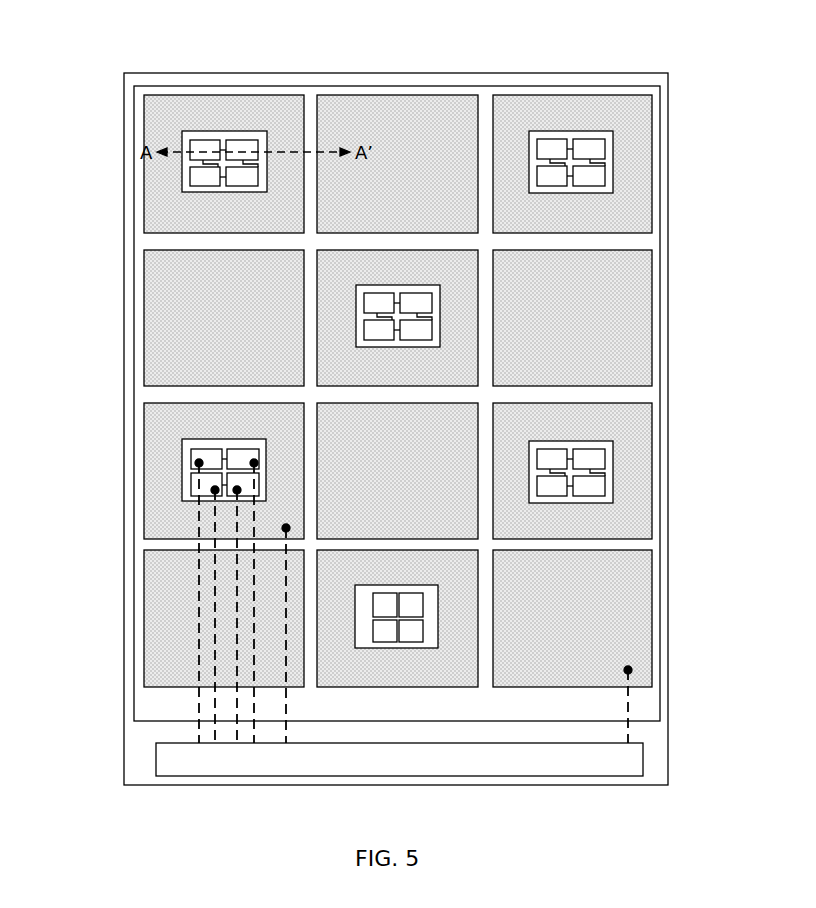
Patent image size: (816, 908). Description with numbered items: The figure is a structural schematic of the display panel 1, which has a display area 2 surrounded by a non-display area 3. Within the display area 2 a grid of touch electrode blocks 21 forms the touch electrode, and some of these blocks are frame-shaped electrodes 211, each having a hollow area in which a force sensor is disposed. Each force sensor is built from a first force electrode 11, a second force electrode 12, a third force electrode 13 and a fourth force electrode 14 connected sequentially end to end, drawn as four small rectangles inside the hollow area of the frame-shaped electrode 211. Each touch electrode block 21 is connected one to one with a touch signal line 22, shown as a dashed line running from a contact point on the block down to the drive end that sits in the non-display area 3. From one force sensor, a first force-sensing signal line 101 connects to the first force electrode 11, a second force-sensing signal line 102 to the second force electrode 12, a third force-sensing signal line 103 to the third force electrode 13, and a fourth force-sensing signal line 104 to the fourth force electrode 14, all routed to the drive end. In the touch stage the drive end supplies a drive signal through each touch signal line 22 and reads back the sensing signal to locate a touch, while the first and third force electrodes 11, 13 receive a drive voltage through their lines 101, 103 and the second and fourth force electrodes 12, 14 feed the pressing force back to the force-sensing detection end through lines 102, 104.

The display panel 1 is at (651, 59).
The display area 2 is at (660, 100).
The non-display area 3 is at (668, 122).
The first force electrode 11 is at (195, 145).
The second force electrode 12 is at (192, 176).
The third force electrode 13 is at (230, 186).
The fourth force electrode 14 is at (236, 140).
The touch electrode block 21 is at (610, 622).
The frame-shaped electrode 211 is at (178, 430).
The first force-sensing signal line 101 is at (199, 530).
The second force-sensing signal line 102 is at (215, 592).
The third force-sensing signal line 103 is at (237, 636).
The fourth force-sensing signal line 104 is at (254, 708).
The touch signal line 22 is at (286, 692).